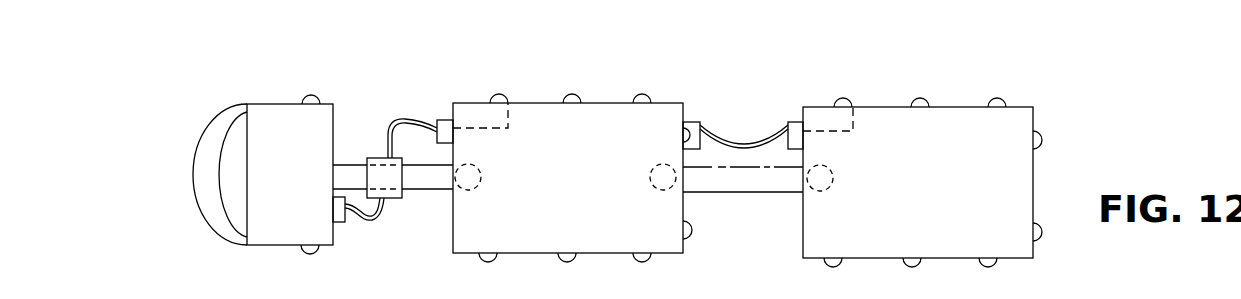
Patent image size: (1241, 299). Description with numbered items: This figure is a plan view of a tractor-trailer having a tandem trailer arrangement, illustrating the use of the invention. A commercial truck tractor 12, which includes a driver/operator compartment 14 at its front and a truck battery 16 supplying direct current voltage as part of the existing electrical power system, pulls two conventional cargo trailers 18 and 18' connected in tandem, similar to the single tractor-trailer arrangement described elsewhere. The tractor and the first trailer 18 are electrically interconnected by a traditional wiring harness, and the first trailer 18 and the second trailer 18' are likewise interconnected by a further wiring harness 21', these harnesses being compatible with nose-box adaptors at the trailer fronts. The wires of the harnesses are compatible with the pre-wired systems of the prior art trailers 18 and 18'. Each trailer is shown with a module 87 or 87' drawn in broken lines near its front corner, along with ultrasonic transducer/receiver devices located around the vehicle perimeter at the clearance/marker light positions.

The commercial truck tractor 12 is at (278, 103).
The driver/operator compartment 14 is at (236, 150).
The truck battery 16 is at (379, 158).
The cargo trailer 18 is at (568, 157).
The second cargo trailer 18' is at (918, 161).
The wiring harness 21' is at (744, 130).
The trailer control module 87 is at (476, 100).
The trailer control module 87' is at (827, 102).